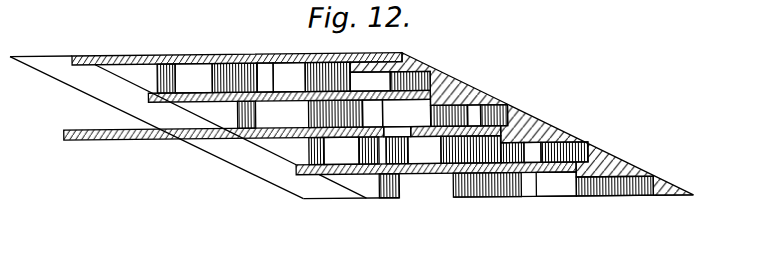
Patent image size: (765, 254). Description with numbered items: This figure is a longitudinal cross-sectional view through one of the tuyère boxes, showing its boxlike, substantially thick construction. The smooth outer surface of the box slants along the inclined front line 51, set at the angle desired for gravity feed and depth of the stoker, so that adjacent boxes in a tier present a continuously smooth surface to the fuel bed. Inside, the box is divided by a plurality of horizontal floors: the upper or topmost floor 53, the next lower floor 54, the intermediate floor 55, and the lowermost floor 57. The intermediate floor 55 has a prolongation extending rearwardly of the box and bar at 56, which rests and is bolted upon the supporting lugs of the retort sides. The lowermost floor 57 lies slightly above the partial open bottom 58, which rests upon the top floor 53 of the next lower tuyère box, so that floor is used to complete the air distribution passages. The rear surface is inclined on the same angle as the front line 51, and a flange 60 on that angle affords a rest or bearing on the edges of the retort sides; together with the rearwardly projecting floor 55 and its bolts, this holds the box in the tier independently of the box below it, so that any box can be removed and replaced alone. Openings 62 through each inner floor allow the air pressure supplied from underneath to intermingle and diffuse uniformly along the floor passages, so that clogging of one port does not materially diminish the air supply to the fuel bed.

The inclined front line 51 is at (530, 130).
The upper floor 53 is at (141, 56).
The next lower floor 54 is at (147, 95).
The intermediate floor 55 is at (246, 141).
The rearward prolongation 56 is at (81, 141).
The lowermost floor 57 is at (418, 178).
The partial open bottom 58 is at (558, 202).
The flange 60 is at (218, 152).
The floor openings 62 is at (322, 94).